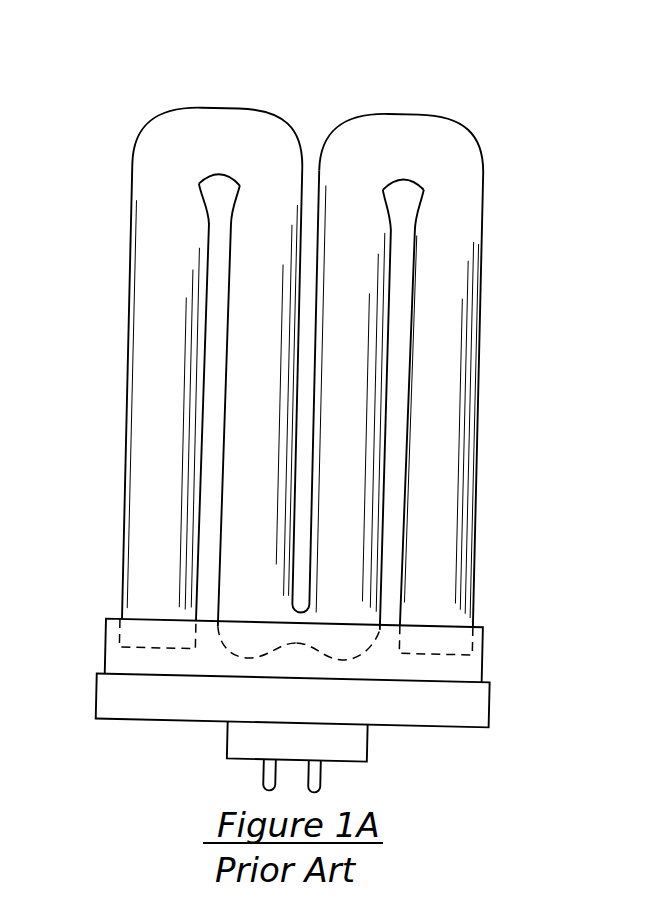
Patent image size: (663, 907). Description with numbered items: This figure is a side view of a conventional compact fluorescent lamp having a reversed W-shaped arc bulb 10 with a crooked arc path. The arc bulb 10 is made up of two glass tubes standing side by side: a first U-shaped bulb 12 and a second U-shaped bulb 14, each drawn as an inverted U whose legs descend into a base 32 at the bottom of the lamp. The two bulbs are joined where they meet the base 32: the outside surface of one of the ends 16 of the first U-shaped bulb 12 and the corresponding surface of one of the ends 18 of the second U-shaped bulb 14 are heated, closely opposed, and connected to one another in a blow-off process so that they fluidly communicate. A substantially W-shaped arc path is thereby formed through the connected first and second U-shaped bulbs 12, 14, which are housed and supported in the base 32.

The reversed W-shaped arc bulb 10 is at (353, 81).
The first U-shaped bulb 12 is at (149, 302).
The second U-shaped bulb 14 is at (454, 428).
The end of the first U-shaped bulb 16 is at (238, 643).
The end of the second U-shaped bulb 18 is at (347, 649).
The base 32 is at (497, 693).